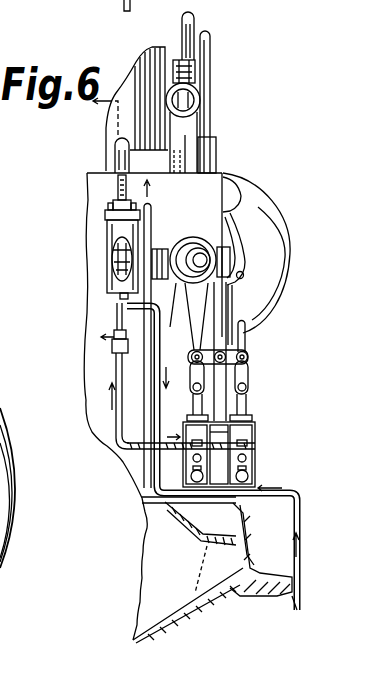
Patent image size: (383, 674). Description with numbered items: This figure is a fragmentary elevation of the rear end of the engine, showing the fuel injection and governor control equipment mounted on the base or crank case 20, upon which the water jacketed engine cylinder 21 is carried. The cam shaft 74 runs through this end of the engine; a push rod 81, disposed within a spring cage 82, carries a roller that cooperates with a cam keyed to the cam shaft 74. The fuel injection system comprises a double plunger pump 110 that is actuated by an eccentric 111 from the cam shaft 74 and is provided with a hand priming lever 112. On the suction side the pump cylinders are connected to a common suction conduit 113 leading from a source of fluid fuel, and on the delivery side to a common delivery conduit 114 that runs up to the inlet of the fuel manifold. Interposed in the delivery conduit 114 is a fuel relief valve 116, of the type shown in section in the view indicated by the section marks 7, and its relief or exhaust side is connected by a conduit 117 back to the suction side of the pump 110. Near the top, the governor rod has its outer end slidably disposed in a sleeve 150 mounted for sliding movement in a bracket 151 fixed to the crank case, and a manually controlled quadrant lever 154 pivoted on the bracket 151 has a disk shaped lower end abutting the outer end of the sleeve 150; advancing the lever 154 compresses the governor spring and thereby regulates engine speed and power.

The section line of FIG. 7 is at (98, 221).
The base or crank case 20 is at (140, 487).
The water jacketed engine cylinder 21 is at (105, 137).
The cam shaft 74 is at (198, 258).
The push rod 81 is at (211, 48).
The spring cage 82 is at (213, 147).
The double plunger pump 110 is at (248, 436).
The eccentric 111 is at (180, 243).
The hand priming lever 112 is at (246, 345).
The suction conduit 113 is at (295, 602).
The delivery conduit 114 is at (124, 3).
The fuel relief valve 116 is at (104, 242).
The conduit 117 is at (156, 420).
The sleeve 150 is at (198, 97).
The bracket 151 is at (183, 127).
The manually controlled quadrant lever 154 is at (197, 27).